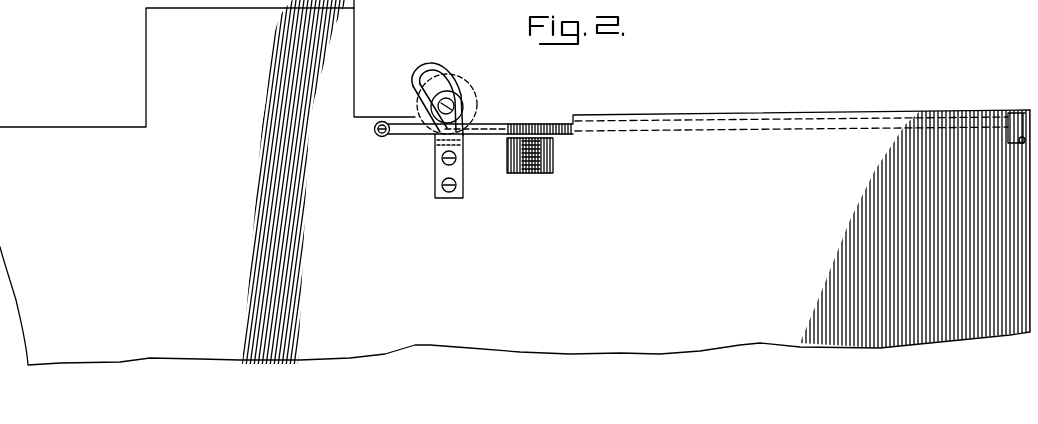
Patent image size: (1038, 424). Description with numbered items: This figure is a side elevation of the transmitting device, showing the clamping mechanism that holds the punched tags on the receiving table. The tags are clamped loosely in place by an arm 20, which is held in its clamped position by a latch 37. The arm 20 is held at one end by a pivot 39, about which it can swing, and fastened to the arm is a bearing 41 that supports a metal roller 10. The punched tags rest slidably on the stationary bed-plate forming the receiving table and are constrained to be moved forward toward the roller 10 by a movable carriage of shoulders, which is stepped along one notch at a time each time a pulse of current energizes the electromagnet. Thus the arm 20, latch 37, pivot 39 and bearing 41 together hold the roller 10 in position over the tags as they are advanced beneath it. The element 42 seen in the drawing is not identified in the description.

The metal roller 10 is at (478, 99).
The arm 20 is at (502, 124).
The latch 37 is at (1014, 112).
The pivot 39 is at (374, 131).
The bearing 41 is at (448, 104).
The block 42 is at (518, 174).